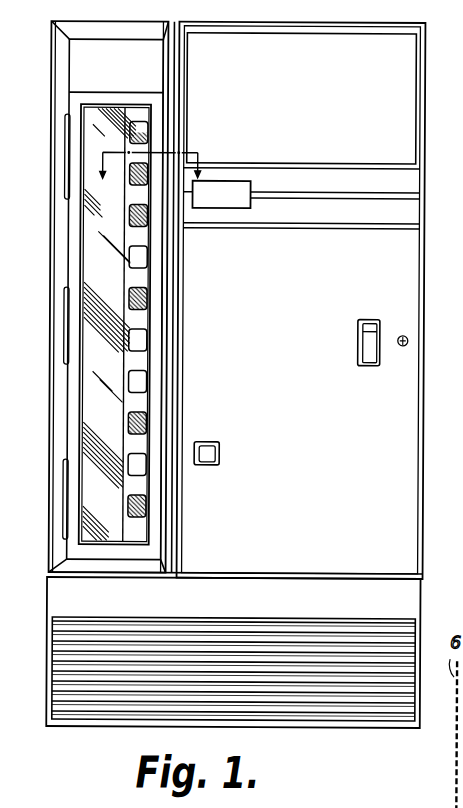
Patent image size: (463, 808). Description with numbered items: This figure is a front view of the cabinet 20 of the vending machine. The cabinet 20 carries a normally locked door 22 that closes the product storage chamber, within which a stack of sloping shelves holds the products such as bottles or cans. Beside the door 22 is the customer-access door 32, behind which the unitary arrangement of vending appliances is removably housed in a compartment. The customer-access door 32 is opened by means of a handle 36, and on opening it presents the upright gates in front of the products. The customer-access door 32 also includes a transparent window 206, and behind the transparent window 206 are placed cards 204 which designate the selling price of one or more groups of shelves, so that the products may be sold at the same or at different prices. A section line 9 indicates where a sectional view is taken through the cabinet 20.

The section line 9- 9 is at (156, 160).
The base 20 is at (405, 595).
The right door 22 is at (405, 508).
The left door 32 is at (72, 418).
The control box 36 is at (157, 210).
The shelves 204 is at (143, 340).
The glass panel 206 is at (83, 322).